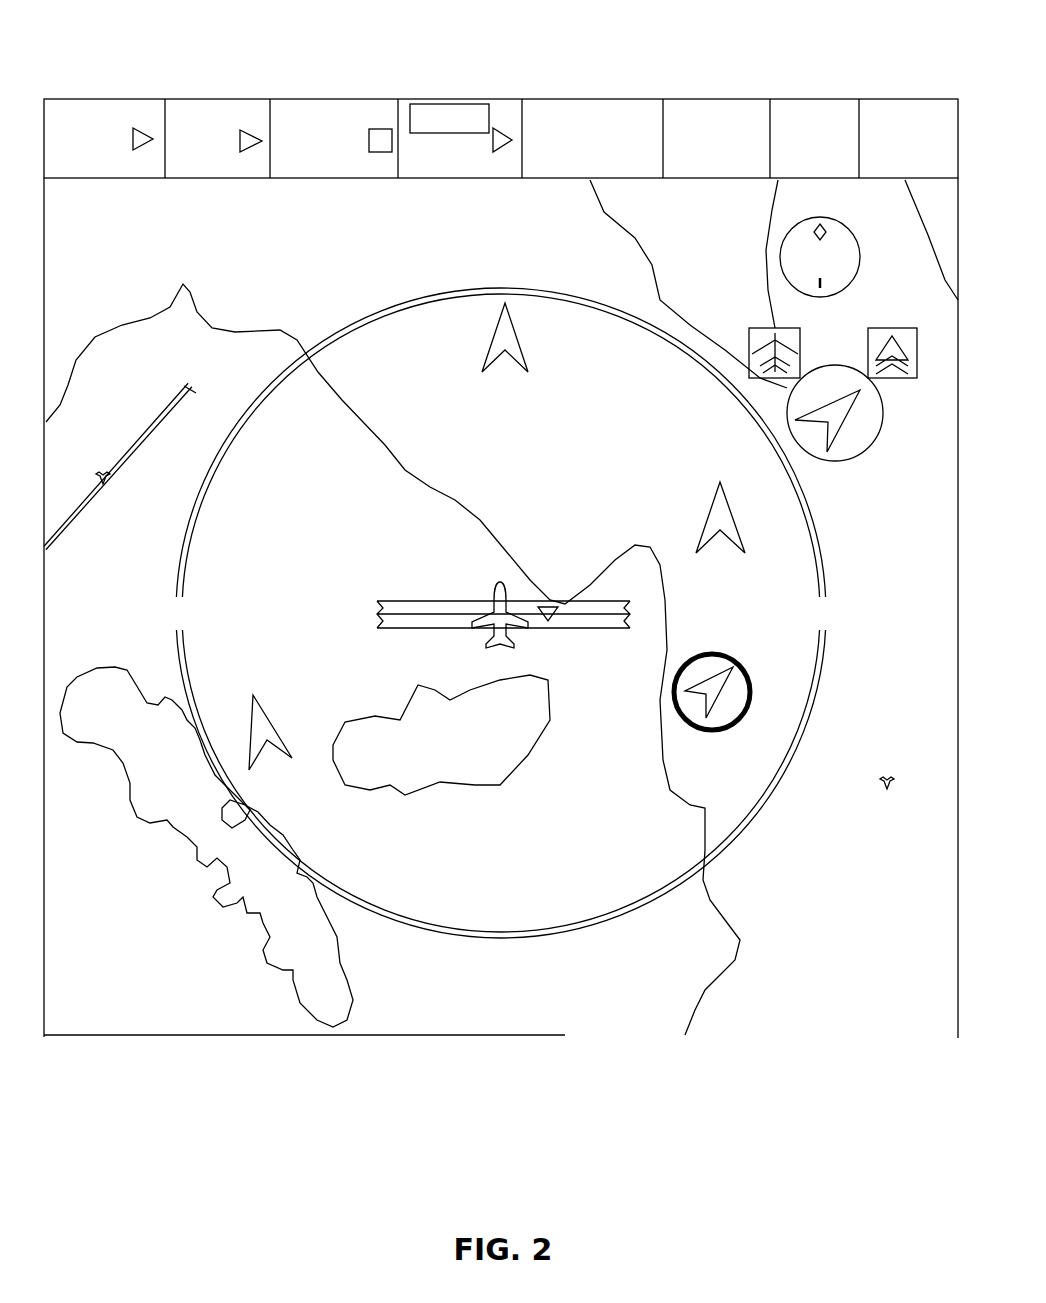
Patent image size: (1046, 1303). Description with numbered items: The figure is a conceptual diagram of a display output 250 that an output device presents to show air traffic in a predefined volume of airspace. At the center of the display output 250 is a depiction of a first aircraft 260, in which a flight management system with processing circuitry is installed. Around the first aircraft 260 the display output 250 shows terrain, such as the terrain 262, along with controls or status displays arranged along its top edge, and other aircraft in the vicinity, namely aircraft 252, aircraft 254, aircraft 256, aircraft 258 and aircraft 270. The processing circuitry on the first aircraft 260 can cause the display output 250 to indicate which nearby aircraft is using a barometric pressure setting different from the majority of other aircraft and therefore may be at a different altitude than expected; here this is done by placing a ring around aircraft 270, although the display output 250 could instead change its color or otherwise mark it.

The display output 250 is at (323, 50).
The aircraft 252 is at (480, 380).
The aircraft 254 is at (718, 478).
The aircraft 256 is at (258, 690).
The aircraft 258 is at (875, 455).
The first aircraft 260 is at (499, 578).
The terrain 262 is at (465, 790).
The aircraft 270 is at (756, 690).